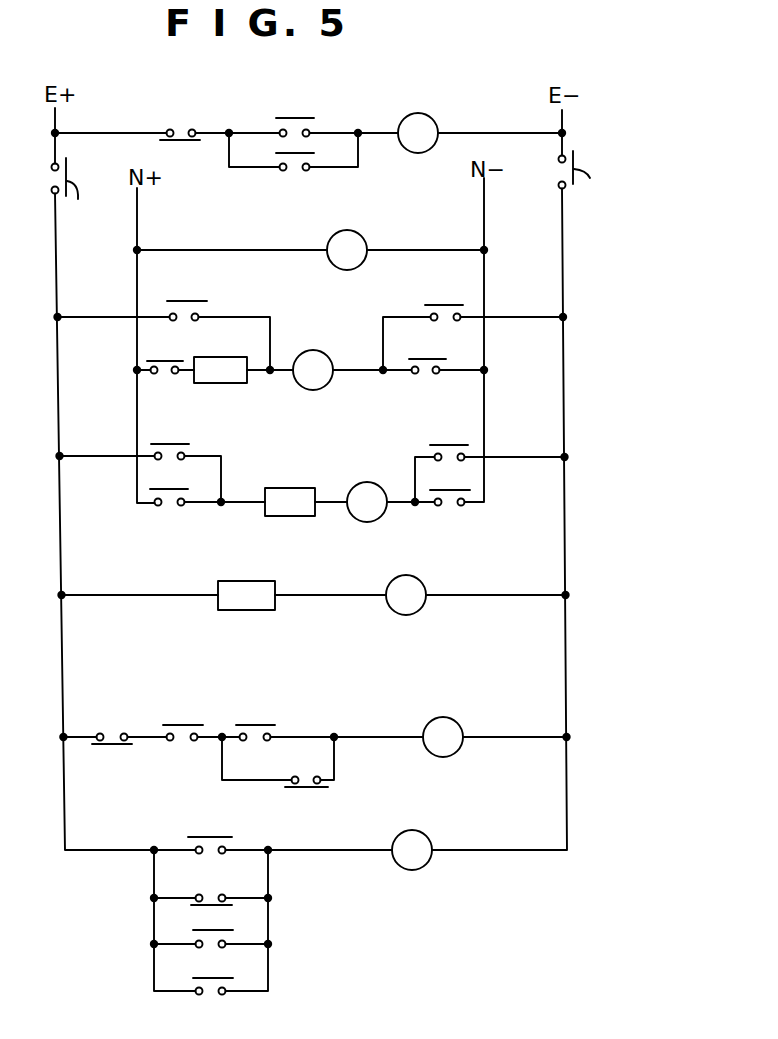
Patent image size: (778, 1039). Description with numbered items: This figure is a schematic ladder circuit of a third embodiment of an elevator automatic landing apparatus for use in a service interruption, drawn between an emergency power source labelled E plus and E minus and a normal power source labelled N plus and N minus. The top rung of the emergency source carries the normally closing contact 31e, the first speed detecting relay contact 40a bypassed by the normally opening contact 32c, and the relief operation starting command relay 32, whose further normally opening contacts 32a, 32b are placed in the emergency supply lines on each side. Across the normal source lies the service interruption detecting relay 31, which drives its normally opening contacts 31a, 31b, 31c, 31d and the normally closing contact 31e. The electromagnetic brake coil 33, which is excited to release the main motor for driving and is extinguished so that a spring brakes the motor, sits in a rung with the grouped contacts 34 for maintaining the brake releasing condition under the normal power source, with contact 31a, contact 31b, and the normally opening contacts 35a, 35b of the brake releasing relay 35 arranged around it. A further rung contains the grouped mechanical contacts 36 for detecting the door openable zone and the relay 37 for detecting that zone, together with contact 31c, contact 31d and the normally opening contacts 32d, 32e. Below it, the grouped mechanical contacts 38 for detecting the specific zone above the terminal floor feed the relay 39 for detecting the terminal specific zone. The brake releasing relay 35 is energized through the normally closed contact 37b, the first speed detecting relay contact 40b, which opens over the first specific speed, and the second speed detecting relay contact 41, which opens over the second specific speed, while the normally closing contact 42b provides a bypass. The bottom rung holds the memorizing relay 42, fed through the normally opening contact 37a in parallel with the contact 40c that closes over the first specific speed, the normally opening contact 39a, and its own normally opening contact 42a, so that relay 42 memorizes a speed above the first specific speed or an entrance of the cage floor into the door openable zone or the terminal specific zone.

The service interruption detecting relay 31 is at (362, 236).
The normally opening contact 31a is at (158, 361).
The normally opening contact 31b is at (409, 359).
The normally opening contact 31c is at (169, 490).
The normally opening contact 31d is at (455, 490).
The normally closing contact 31e is at (181, 129).
The relief operation starting command relay 32 is at (431, 115).
The normally opening contact 32a is at (81, 194).
The normally opening contact 32b is at (591, 177).
The normally opening contact 32c is at (294, 153).
The normally opening contact 32d is at (170, 444).
The normally opening contact 32e is at (440, 445).
The electromagnetic brake coil 33 is at (313, 350).
The grouped contacts for maintaining brake releasing condition 34 is at (210, 357).
The brake releasing relay 35 is at (450, 716).
The normally opening contact 35a is at (190, 302).
The normally opening contact 35b is at (441, 304).
The grouped mechanical contacts for detecting the door openable zone 36 is at (287, 488).
The relay for detecting the door openable zone 37 is at (365, 482).
The normally opening contact 37a is at (227, 828).
The normally closed contact 37b is at (112, 733).
The grouped mechanical contacts for detecting the specific zone 38 is at (252, 581).
The relay for detecting the terminal specific zone 39 is at (422, 567).
The normally opening contact 39a is at (217, 930).
The first speed detecting relay contact 40a is at (296, 117).
The first speed detecting relay contact 40b is at (185, 725).
The contact which closes over the first specific speed 40c is at (212, 900).
The second speed detecting relay contact 41 is at (260, 725).
The memorizing relay 42 is at (426, 865).
The normally opening contact 42a is at (218, 978).
The normally closing contact 42b is at (305, 788).